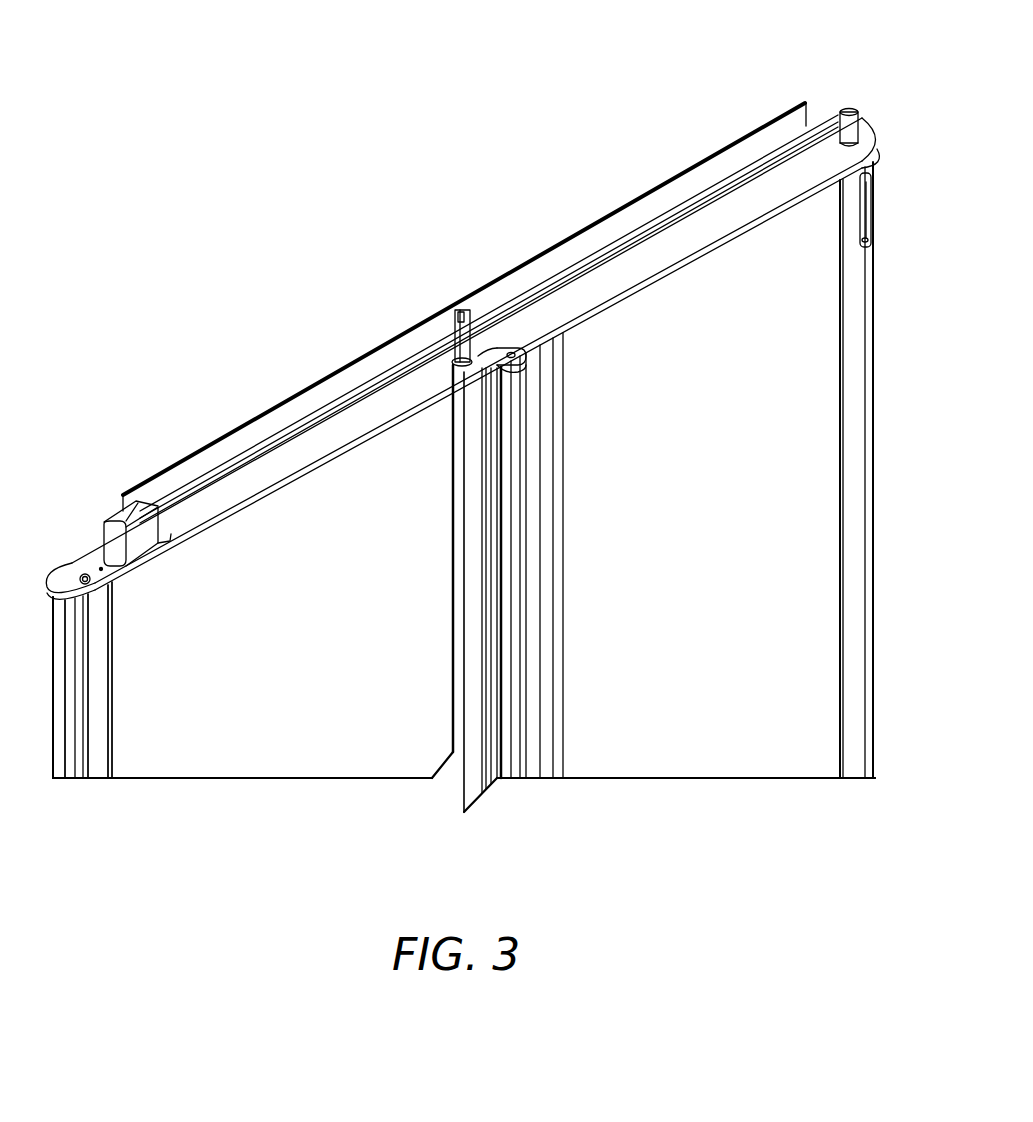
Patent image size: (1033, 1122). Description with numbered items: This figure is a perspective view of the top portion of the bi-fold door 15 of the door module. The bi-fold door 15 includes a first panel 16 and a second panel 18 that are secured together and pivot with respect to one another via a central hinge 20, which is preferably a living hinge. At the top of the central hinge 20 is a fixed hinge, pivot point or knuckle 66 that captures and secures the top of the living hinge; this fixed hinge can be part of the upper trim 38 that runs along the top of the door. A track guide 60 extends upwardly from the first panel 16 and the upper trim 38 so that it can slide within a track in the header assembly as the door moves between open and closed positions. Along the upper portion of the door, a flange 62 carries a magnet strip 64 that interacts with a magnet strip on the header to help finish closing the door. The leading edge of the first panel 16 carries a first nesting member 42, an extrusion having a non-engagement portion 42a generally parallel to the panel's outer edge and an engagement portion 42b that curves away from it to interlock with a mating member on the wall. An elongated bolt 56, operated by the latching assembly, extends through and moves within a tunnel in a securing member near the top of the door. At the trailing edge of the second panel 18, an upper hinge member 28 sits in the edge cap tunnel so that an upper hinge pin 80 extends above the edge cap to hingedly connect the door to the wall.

The bi-fold door 15 is at (243, 814).
The first panel 16 is at (283, 701).
The second panel 18 is at (713, 557).
The central hinge 20 is at (542, 476).
The upper hinge member 28 is at (868, 210).
The upper trim 38 is at (327, 444).
The first nesting member 42 is at (70, 738).
The non-engagement portion 42a is at (60, 610).
The engagement portion 42b is at (93, 762).
The elongated bolt 56 is at (457, 318).
The track guide 60 is at (120, 511).
The flange 62 is at (698, 163).
The magnet strip 64 is at (568, 266).
The fixed hinge knuckle 66 is at (511, 333).
The upper hinge pin 80 is at (848, 109).